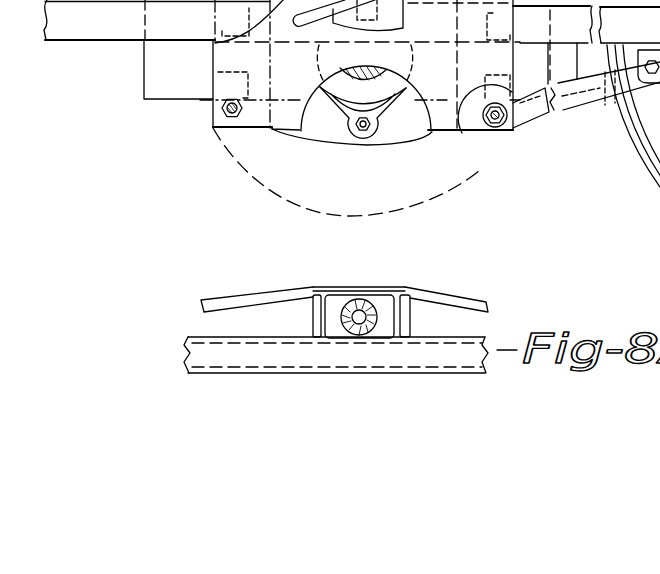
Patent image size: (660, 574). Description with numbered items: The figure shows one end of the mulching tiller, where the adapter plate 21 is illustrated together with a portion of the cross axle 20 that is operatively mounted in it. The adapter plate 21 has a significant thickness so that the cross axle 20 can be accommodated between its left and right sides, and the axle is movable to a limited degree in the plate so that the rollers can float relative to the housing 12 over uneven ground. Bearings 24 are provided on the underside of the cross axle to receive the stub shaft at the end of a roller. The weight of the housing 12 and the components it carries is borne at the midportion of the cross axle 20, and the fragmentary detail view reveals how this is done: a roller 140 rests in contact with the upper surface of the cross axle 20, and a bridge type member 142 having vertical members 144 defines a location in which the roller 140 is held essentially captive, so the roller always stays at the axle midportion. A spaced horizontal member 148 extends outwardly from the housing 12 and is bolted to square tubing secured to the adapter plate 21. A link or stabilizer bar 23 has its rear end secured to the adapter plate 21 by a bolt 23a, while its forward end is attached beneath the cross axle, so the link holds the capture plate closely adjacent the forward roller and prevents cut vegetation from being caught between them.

In FIG. 8, the housing 12 is at (150, 66).
In FIG. 8, the adapter plate 21 is at (223, 90).
In FIG. 8, the horizontal member 148 is at (463, 133).
In FIG. 8, the link or stabilizer bar 23 is at (538, 120).
In FIG. 8, the bolt 23a is at (496, 128).
In FIG. 8, the bearings 24 is at (633, 116).
In FIG. 8A, the bridge type member 142 is at (213, 300).
In FIG. 8A, the vertical members 144 is at (314, 310).
In FIG. 8A, the roller 140 is at (373, 314).
In FIG. 8A, the cross axle 20 is at (448, 360).